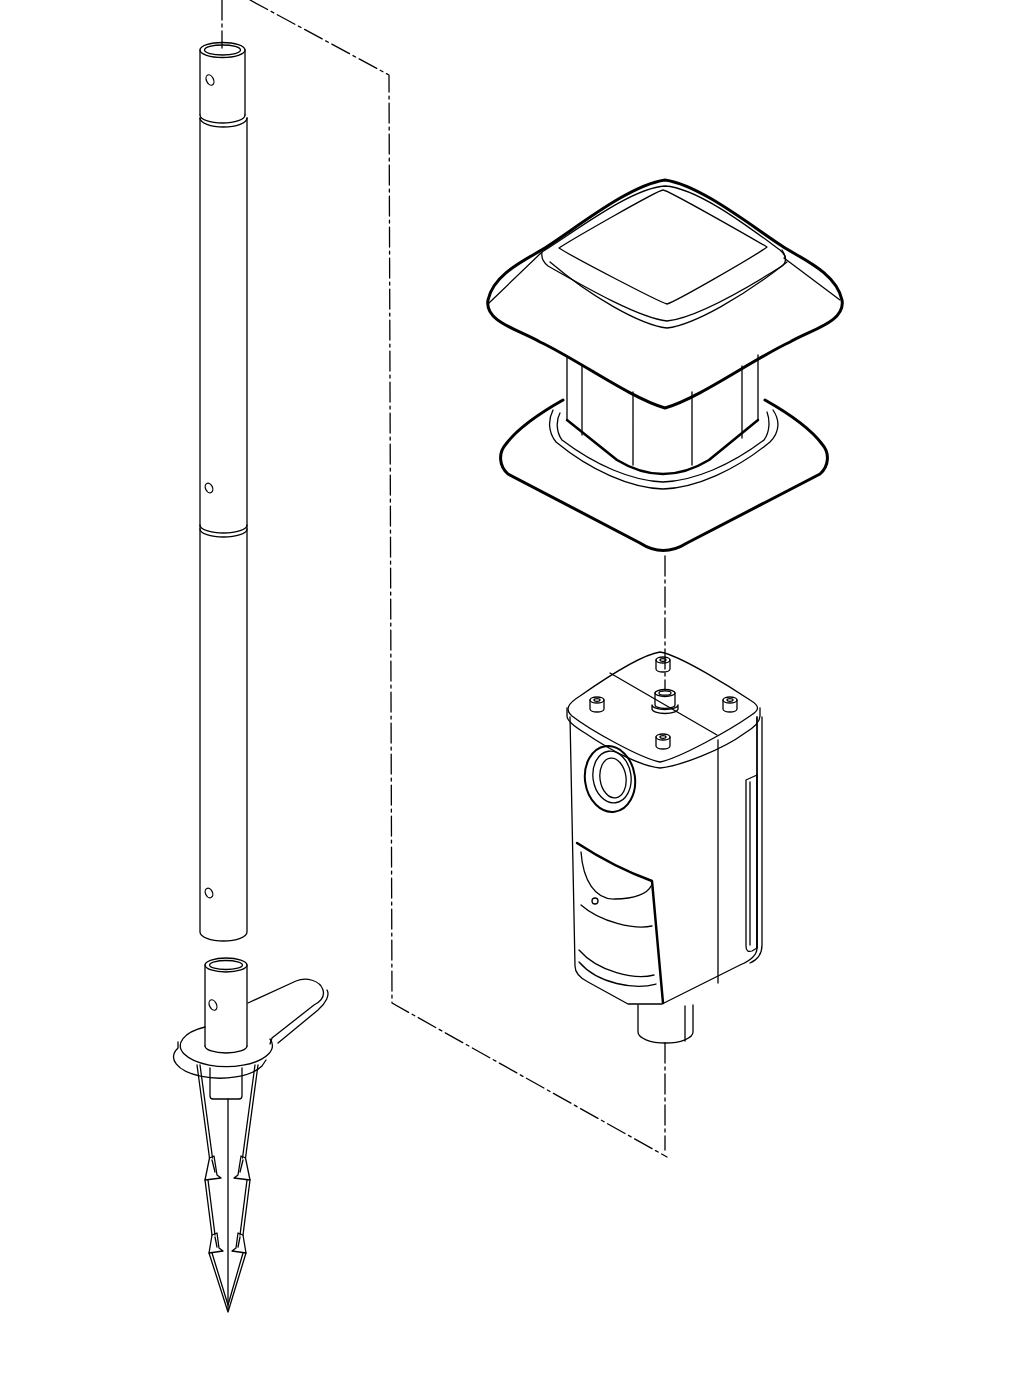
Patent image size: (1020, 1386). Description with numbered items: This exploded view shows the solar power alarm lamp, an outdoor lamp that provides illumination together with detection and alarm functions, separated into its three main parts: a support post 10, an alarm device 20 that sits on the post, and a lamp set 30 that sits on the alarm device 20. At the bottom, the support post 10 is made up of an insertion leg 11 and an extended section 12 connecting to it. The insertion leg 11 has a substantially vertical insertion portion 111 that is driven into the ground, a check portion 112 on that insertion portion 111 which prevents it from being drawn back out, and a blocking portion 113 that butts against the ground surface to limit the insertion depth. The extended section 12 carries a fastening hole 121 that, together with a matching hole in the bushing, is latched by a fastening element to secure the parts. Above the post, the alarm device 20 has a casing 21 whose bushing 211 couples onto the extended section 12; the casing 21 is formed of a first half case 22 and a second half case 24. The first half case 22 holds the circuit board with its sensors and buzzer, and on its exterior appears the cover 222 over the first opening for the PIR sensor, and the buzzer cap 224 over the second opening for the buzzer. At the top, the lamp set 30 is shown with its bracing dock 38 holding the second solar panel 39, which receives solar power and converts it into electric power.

The support post 10 is at (200, 423).
The extended section 12 is at (240, 685).
The fastening hole 121 is at (207, 82).
The insertion leg 11 is at (67, 1010).
The insertion portion 111 is at (218, 1123).
The check portion 112 is at (212, 1237).
The blocking portion 113 is at (190, 1032).
The lamp set 30 is at (566, 382).
The bracing dock 38 is at (517, 287).
The second solar panel 39 is at (683, 220).
The alarm device 20 is at (572, 818).
The casing 21 is at (847, 1020).
The first half case 22 is at (702, 982).
The second half case 24 is at (735, 945).
The cover 222 is at (592, 937).
The buzzer cap 224 is at (605, 772).
The bushing 211 is at (648, 1020).